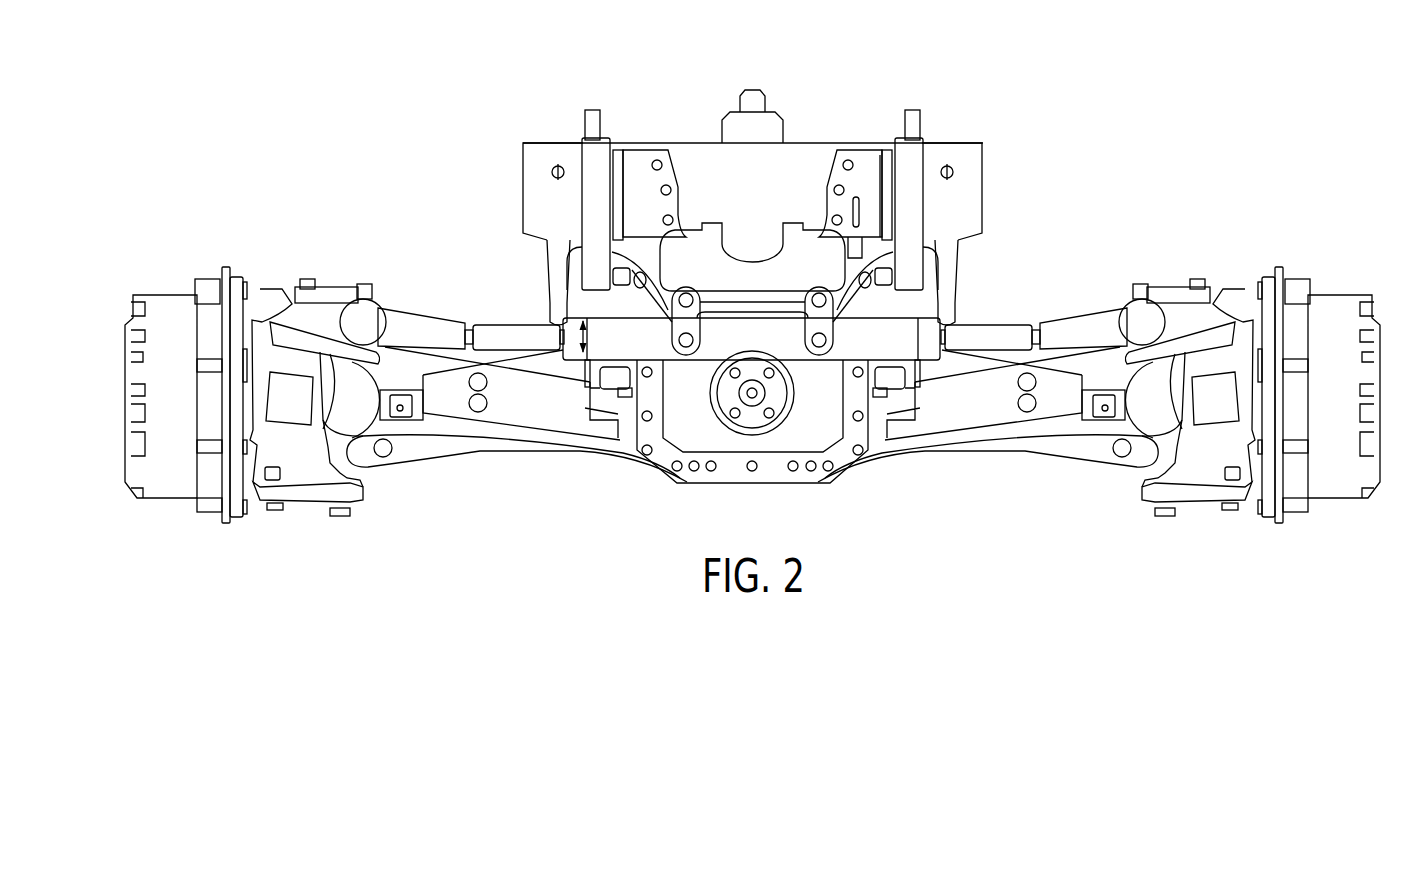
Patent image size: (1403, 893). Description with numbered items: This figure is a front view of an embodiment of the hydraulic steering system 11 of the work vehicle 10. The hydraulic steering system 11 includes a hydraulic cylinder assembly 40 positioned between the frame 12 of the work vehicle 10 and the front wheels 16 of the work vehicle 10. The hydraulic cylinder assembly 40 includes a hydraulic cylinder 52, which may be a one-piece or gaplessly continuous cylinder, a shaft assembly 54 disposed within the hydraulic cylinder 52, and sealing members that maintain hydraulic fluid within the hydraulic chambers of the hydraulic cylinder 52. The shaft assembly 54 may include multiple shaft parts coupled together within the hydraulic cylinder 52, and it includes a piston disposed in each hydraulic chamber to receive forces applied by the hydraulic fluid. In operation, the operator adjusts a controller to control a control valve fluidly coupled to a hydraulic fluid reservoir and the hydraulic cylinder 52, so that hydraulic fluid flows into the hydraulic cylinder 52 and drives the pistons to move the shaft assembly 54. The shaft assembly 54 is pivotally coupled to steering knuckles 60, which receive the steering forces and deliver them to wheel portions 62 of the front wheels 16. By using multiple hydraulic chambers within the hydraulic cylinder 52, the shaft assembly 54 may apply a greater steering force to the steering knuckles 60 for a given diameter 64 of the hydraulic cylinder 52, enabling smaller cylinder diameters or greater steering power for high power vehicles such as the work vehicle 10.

The work vehicle 10 is at (751, 308).
The hydraulic steering system 11 is at (751, 317).
The frame 12 is at (527, 275).
The front wheels 16 is at (132, 508).
The hydraulic cylinder assembly 40 is at (988, 318).
The hydraulic cylinder 52 is at (920, 330).
The shaft assembly 54 is at (518, 321).
The steering knuckles 60 is at (283, 527).
The wheel portions 62 is at (173, 517).
The diameter 64 is at (582, 338).